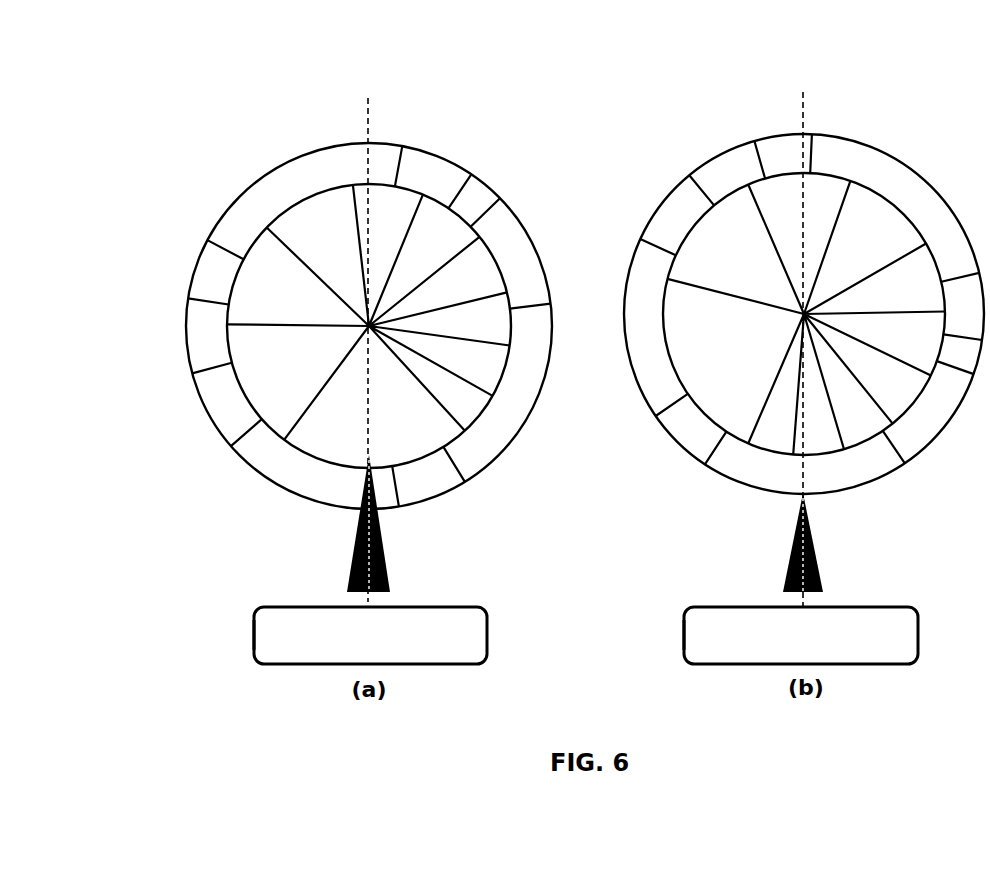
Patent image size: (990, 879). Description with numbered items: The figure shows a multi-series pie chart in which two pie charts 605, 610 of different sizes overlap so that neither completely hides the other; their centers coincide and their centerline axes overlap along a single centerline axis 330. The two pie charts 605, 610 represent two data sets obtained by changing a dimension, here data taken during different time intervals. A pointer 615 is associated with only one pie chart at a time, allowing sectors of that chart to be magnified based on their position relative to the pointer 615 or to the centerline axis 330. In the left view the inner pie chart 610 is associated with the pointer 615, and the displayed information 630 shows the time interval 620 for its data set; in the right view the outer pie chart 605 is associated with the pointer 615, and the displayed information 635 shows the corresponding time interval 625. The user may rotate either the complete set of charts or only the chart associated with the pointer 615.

The centerline axis 330 is at (368, 128).
The pie chart 605 is at (258, 178).
The pie chart 610 is at (253, 242).
The pointer 615 is at (383, 550).
The time interval 620 is at (430, 610).
The time interval 625 is at (840, 612).
The displayed information 630 is at (253, 633).
The displayed information 635 is at (683, 637).